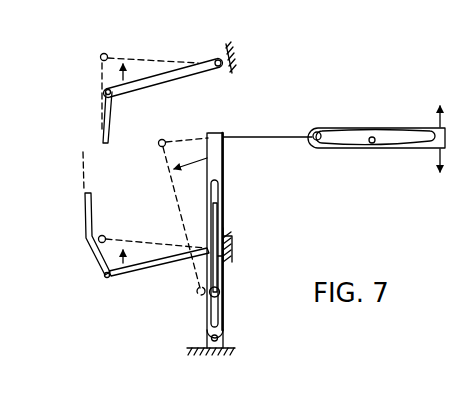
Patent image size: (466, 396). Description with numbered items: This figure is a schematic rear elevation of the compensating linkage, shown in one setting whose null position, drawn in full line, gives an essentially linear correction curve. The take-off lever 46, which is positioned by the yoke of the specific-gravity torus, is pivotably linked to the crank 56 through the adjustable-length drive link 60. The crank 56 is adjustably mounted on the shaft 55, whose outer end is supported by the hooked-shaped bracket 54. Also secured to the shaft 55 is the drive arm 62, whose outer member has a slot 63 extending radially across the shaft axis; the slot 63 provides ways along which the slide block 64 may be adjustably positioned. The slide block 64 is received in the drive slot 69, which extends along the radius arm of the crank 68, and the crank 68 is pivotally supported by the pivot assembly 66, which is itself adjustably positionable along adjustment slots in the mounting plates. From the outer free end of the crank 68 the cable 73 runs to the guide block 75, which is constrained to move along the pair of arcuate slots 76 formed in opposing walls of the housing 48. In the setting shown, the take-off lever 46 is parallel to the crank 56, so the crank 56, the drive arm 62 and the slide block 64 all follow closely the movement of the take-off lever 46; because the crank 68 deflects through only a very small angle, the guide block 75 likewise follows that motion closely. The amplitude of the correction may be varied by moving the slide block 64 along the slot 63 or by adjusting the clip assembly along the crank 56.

The take-off lever 46 is at (142, 56).
The housing 48 is at (428, 143).
The hooked-shaped bracket 54 is at (226, 252).
The shaft 55 is at (221, 259).
The crank 56 is at (147, 242).
The drive link 60 is at (100, 77).
The drive arm 62 is at (236, 202).
The slot 63 is at (221, 229).
The slide block 64 is at (198, 292).
The pivot assembly 66 is at (223, 343).
The crank 68 is at (226, 165).
The drive slot 69 is at (219, 185).
The cable 73 is at (177, 137).
The guide block 75 is at (319, 131).
The arcuate slots 76 is at (342, 144).